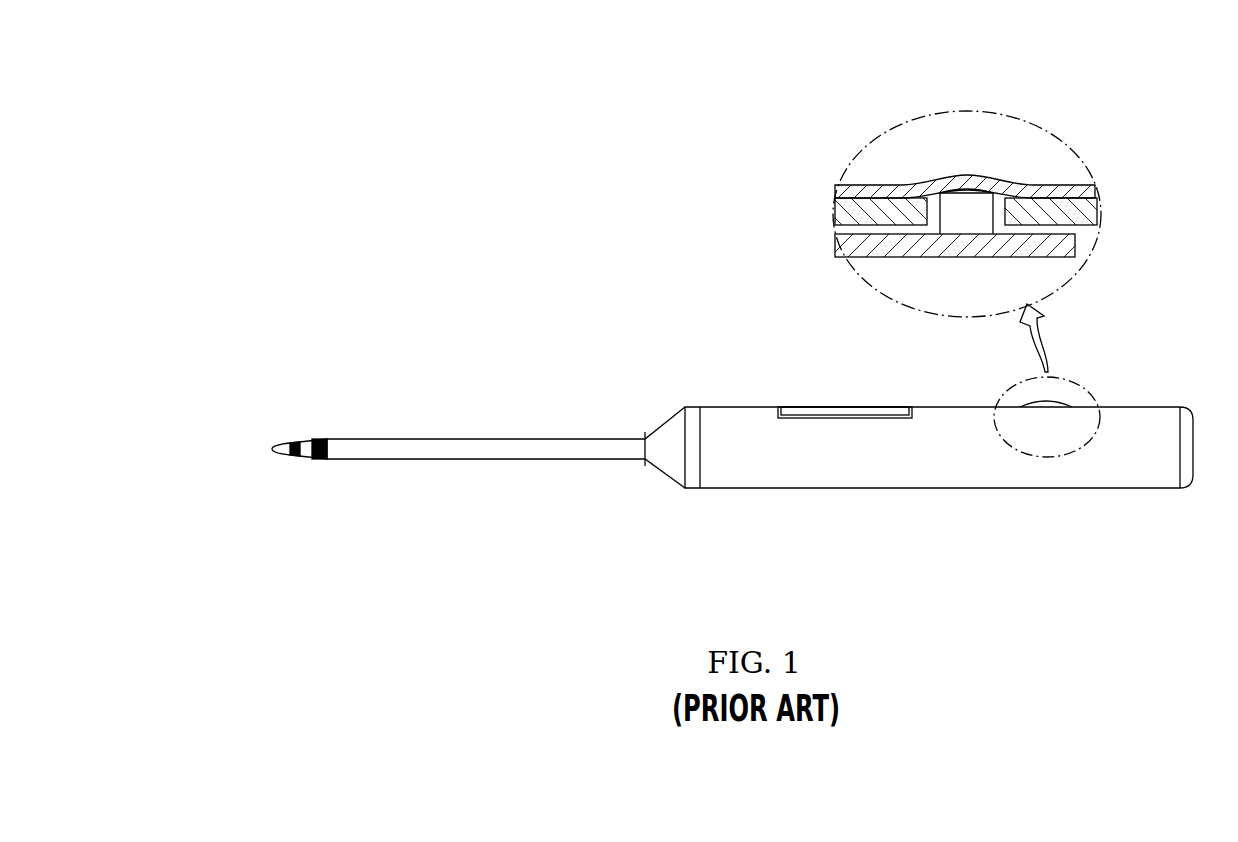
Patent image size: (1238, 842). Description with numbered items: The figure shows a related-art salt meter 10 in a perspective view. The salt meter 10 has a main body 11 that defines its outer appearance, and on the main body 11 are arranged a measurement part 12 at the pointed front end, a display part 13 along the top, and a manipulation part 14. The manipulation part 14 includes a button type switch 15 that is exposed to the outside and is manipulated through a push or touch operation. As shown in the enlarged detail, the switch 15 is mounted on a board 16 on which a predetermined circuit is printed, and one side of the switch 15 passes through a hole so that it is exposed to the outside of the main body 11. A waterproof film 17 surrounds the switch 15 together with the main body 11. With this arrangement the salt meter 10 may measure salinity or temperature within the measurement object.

The salt meter 10 is at (520, 312).
The main body 11 is at (797, 500).
The measurement part 12 is at (303, 472).
The display part 13 is at (805, 397).
The manipulation part 14 is at (1073, 395).
The button type switch 15 is at (982, 203).
The board 16 is at (1060, 247).
The waterproof film 17 is at (967, 177).